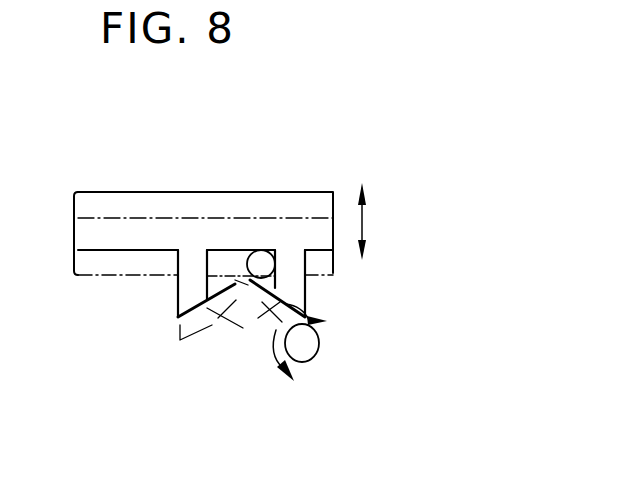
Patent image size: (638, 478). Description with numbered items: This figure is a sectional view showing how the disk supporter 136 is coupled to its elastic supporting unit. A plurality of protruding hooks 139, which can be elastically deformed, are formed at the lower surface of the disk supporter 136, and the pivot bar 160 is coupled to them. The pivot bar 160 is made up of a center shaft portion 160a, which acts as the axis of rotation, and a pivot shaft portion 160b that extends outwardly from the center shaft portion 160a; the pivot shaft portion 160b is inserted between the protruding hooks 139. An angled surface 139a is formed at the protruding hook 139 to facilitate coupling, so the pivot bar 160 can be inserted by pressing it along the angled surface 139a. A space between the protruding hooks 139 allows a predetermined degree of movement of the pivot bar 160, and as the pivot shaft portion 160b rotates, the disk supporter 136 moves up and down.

The disk supporter 136 is at (160, 207).
The protruding hook 139 is at (180, 290).
The angled surface 139a is at (197, 308).
The pivot bar 160 is at (443, 340).
The center shaft portion 160a is at (320, 362).
The pivot shaft portion 160b is at (272, 258).